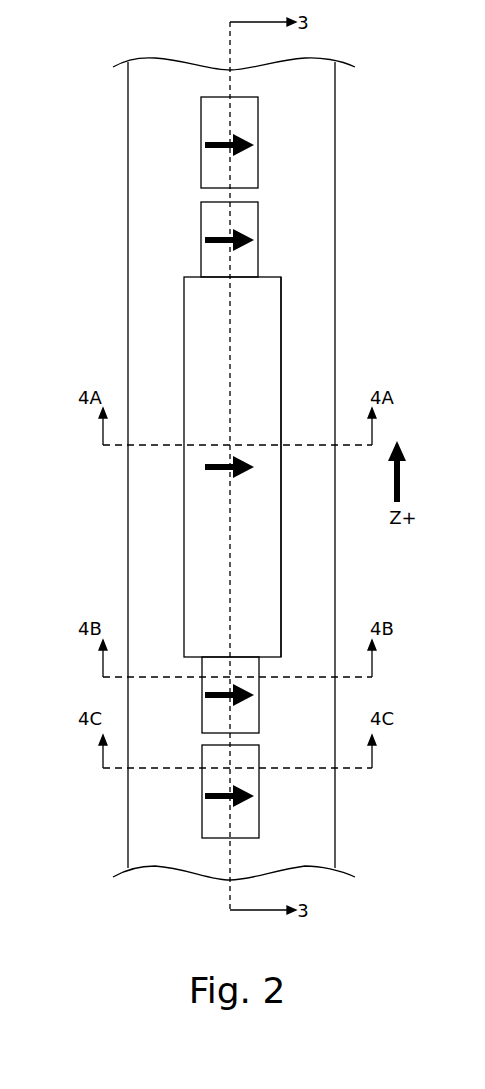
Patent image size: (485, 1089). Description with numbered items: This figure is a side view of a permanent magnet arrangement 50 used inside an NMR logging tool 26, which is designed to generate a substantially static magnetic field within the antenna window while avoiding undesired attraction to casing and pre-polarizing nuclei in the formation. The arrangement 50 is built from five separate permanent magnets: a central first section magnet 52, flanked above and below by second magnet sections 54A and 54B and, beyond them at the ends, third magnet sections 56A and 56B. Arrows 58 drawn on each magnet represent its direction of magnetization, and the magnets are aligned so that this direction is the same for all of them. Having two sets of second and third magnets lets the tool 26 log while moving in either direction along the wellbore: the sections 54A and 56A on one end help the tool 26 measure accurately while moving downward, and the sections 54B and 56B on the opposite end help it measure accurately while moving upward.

The NMR logging tool 26 is at (90, 111).
The permanent magnet arrangement 50 is at (300, 364).
The first section permanent magnet 52 is at (281, 575).
The second magnet section 54A is at (259, 712).
The second magnet section 54B is at (258, 232).
The third magnet section 56A is at (259, 821).
The third magnet section 56B is at (258, 130).
The arrows 58 is at (217, 150).